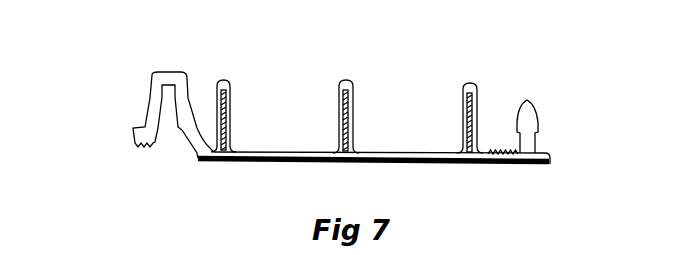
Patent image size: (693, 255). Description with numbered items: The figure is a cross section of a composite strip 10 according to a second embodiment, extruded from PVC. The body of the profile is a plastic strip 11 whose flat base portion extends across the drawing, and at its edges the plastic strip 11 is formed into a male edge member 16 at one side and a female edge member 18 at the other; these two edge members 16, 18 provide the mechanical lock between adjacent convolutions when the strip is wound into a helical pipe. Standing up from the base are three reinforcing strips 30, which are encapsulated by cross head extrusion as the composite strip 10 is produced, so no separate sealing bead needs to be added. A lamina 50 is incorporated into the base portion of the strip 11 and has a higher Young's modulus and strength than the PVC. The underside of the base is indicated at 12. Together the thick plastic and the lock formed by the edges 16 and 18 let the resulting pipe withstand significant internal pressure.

The composite strip 10 is at (568, 132).
The plastic strip 11 is at (285, 152).
The underside of base strip 12 is at (413, 164).
The male edge member 16 is at (535, 114).
The female edge member 18 is at (153, 90).
The reinforcing strips 30 is at (230, 108).
The lamina 50 is at (488, 165).